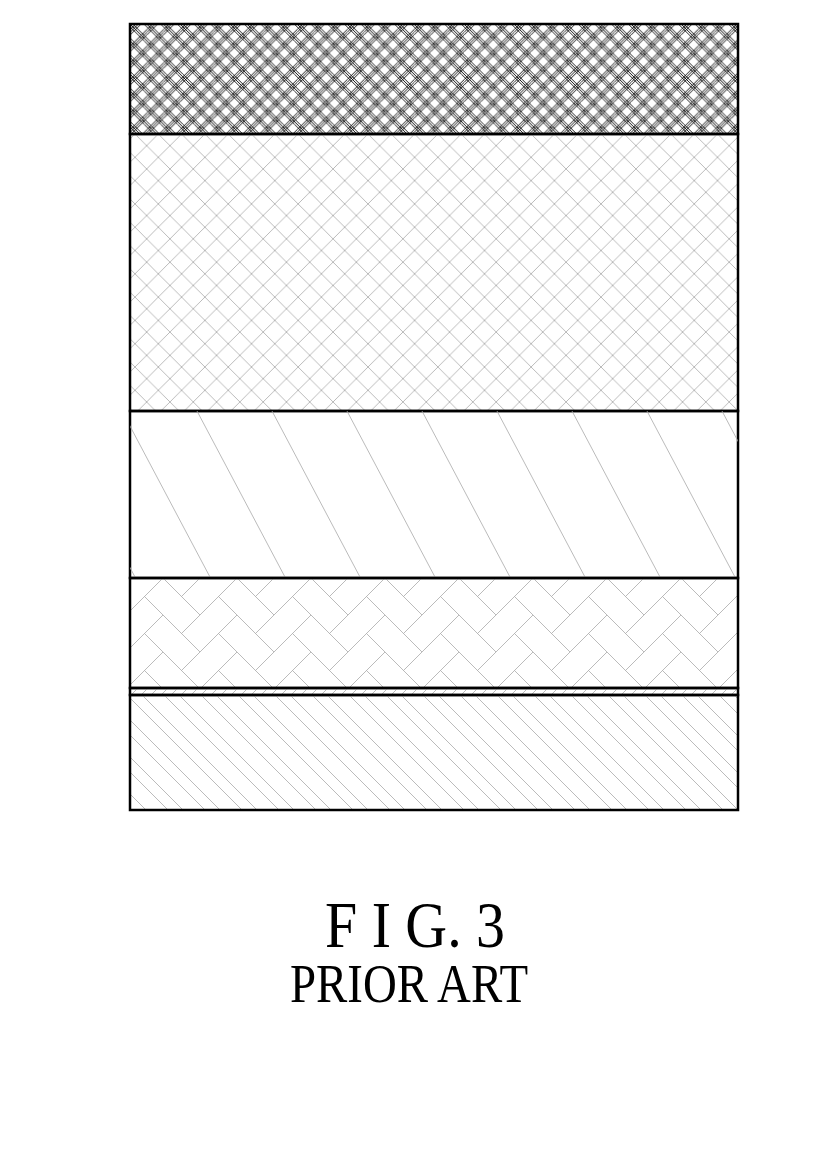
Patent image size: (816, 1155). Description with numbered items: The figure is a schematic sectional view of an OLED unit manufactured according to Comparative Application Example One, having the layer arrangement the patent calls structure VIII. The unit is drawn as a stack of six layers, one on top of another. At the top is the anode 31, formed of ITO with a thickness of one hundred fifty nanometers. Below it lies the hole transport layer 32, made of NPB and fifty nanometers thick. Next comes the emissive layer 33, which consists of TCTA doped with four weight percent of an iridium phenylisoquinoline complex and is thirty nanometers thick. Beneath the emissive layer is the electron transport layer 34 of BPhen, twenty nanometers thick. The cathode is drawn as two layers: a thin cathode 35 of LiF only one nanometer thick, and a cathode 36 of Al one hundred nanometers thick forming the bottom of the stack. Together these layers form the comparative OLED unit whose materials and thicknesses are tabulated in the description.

The anode 31 is at (147, 78).
The hole transport layer 32 is at (137, 259).
The emissive layer 33 is at (137, 477).
The electron transport layer 34 is at (137, 632).
The cathode 35 is at (137, 690).
The cathode 36 is at (150, 743).